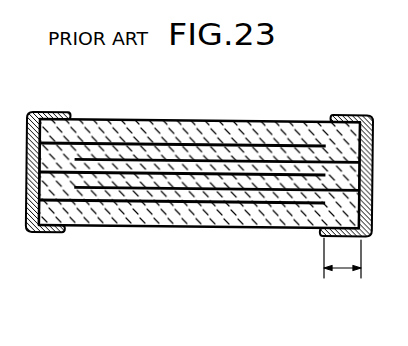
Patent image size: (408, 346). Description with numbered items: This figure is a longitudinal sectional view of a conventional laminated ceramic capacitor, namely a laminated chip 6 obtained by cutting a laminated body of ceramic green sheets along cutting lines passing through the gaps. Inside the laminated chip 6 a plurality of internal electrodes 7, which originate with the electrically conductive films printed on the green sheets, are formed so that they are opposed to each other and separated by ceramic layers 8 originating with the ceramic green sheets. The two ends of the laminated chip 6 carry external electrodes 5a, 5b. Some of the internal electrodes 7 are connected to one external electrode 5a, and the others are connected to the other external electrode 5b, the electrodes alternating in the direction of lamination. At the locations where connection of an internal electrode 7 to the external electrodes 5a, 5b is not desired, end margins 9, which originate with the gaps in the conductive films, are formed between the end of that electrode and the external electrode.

The external electrode 5a is at (50, 111).
The external electrode 5b is at (364, 112).
The laminated chip 6 is at (262, 120).
The internal electrodes 7 is at (150, 159).
The ceramic layers 8 is at (125, 194).
The end margins 9 is at (339, 272).